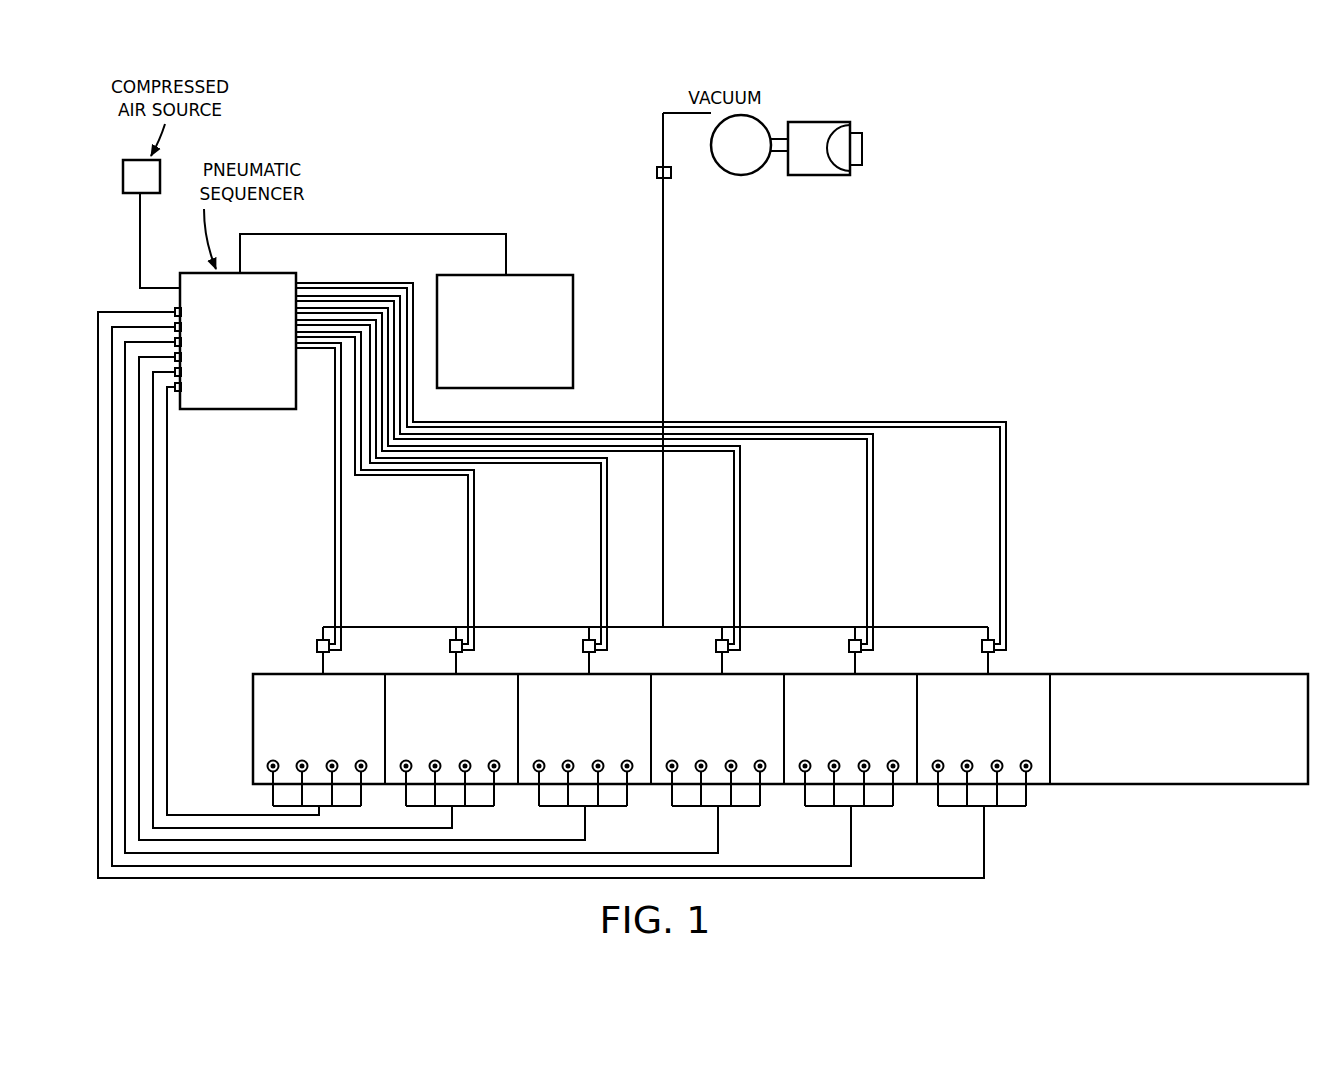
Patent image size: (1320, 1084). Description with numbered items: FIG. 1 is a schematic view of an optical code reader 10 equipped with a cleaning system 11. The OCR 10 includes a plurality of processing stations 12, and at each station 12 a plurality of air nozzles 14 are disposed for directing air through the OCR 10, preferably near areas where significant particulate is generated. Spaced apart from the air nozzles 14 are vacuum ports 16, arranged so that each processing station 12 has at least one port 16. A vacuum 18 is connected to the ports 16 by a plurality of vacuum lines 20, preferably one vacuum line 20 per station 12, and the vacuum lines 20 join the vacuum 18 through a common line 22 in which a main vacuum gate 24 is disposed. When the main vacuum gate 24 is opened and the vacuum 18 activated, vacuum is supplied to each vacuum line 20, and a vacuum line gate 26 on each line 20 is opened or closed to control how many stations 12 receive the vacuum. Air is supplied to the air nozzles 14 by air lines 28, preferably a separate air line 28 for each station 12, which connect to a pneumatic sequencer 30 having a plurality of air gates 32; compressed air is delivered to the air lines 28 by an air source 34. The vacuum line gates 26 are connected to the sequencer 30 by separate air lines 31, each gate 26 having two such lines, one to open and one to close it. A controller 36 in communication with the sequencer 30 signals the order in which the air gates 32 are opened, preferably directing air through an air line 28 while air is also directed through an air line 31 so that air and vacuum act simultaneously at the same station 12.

The optical code reader 10 is at (1163, 676).
The cleaning system 11 is at (1064, 819).
The processing station 12 is at (399, 676).
The air nozzle 14 is at (283, 733).
The vacuum port 16 is at (323, 676).
The vacuum 18 is at (810, 122).
The vacuum line 20 is at (320, 632).
The common line 22 is at (663, 556).
The main vacuum gate 24 is at (672, 175).
The vacuum line gate 26 is at (315, 646).
The air line 28 is at (319, 811).
The pneumatic sequencer 30 is at (203, 273).
The air line 31 is at (347, 542).
The air gate 32 is at (182, 312).
The air source 34 is at (123, 176).
The controller 36 is at (573, 320).